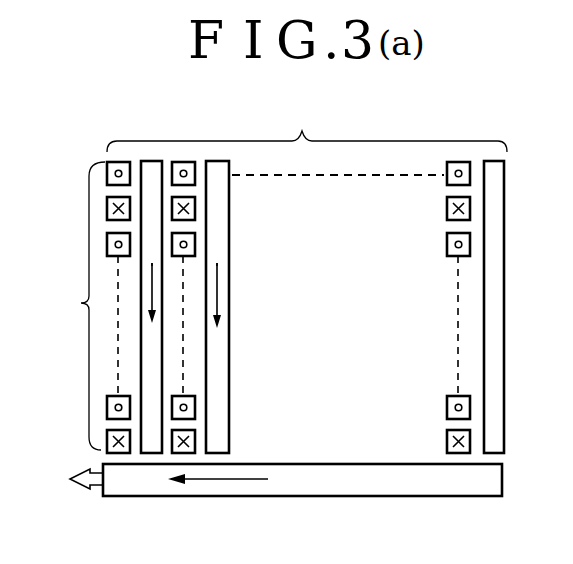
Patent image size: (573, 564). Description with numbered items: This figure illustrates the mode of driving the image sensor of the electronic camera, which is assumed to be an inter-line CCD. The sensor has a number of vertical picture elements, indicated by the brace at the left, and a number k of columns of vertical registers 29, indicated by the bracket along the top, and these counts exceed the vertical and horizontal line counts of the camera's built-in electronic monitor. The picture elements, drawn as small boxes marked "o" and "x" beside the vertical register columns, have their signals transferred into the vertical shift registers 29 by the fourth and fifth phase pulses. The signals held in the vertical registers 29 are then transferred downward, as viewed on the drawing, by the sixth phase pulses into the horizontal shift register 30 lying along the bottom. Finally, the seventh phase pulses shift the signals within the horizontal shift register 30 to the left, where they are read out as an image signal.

The vertical shift register 29 is at (484, 320).
The horizontal shift register 30 is at (334, 464).
The number of columns of vertical registers k is at (307, 126).